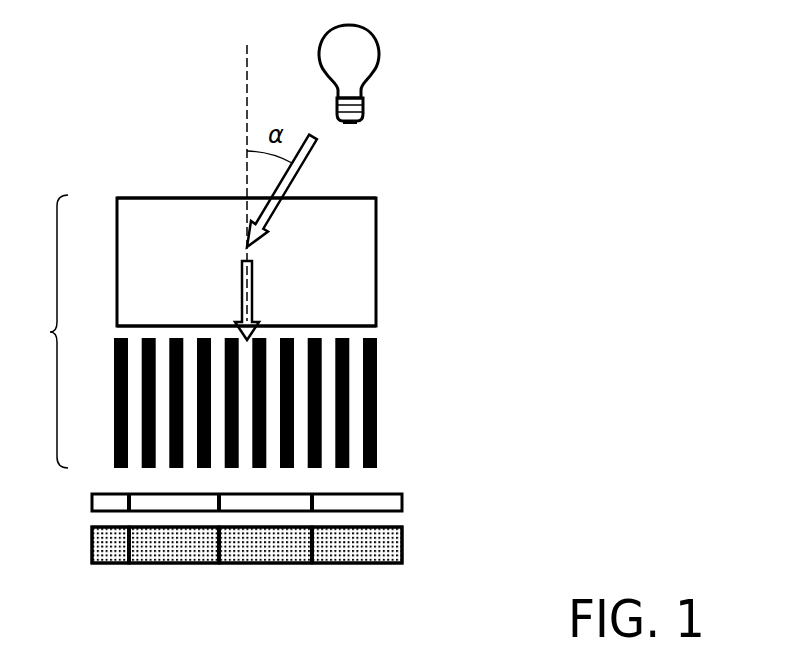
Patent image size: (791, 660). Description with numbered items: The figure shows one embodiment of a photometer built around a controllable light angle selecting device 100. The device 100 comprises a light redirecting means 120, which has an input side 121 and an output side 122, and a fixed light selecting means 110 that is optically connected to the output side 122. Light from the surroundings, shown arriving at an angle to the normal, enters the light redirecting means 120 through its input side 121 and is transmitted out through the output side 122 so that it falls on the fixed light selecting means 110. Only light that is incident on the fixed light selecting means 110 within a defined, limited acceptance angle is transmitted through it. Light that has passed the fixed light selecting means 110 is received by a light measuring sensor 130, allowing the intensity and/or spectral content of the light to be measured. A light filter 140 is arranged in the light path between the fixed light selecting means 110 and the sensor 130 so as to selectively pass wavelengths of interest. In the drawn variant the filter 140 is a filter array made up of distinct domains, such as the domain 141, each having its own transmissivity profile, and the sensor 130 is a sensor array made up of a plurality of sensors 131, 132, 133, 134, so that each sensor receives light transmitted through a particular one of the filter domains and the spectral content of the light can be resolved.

The controllable light angle selecting device 100 is at (37, 331).
The fixed light selecting means 110 is at (377, 433).
The light redirecting means 120 is at (376, 262).
The input side 121 is at (362, 197).
The output side 122 is at (350, 326).
The light measuring sensor 130 is at (421, 548).
The sensor 131 is at (107, 563).
The sensor 132 is at (205, 563).
The sensor 133 is at (285, 563).
The sensor 134 is at (383, 563).
The light filter 140 is at (421, 501).
The filter domain 141 is at (95, 503).